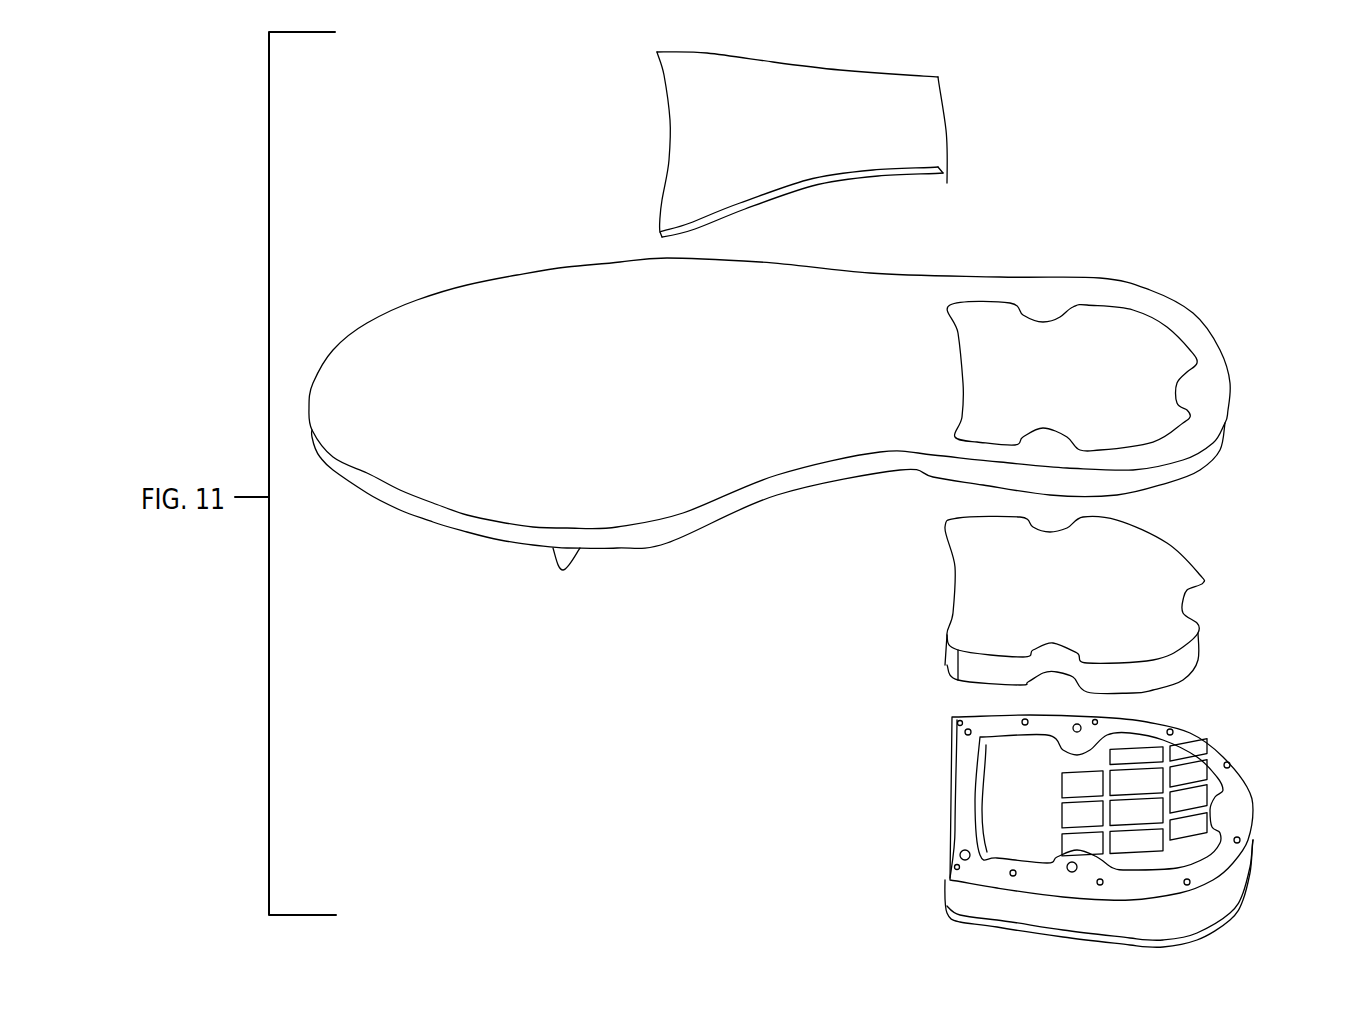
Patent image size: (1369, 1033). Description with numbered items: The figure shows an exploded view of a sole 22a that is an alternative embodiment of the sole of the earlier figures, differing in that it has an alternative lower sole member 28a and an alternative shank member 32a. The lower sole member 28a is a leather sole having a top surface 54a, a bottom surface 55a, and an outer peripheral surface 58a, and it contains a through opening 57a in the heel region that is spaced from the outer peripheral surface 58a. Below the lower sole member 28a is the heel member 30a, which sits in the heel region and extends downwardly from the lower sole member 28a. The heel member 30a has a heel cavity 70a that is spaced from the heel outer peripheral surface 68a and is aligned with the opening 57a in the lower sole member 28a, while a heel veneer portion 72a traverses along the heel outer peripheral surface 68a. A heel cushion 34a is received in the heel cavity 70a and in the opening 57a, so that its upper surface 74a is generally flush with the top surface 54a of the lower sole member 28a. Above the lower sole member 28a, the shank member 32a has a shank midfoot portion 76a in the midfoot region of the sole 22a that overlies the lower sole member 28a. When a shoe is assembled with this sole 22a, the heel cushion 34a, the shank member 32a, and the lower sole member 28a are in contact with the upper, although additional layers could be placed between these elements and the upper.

The sole 22a is at (1195, 82).
The lower sole member 28a is at (1110, 280).
The heel member 30a is at (1202, 752).
The shank member 32a is at (922, 148).
The heel cushion 34a is at (1148, 563).
The top surface 54a is at (670, 380).
The bottom surface 55a is at (553, 548).
The through opening 57a is at (1062, 364).
The outer peripheral surface 58a is at (512, 525).
The heel outer peripheral surface 68a is at (955, 765).
The heel cavity 70a is at (1003, 812).
The heel veneer portion 72a is at (953, 833).
The upper surface 74a is at (1083, 601).
The shank midfoot portion 76a is at (795, 85).